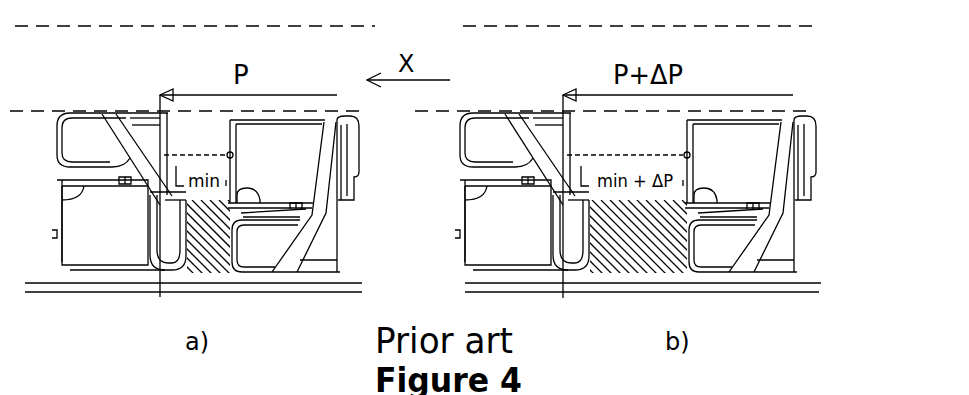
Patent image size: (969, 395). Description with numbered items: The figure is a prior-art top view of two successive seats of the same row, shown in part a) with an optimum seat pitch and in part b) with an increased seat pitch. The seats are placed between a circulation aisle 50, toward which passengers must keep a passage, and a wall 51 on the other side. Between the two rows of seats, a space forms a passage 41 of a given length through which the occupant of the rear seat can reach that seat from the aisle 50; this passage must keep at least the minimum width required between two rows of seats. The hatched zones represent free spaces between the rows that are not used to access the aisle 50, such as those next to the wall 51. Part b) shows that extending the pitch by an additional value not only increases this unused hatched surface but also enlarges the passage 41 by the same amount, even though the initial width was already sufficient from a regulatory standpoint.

The circulation aisle 50 is at (102, 62).
The passage 41 is at (215, 150).
The wall 51 is at (62, 293).